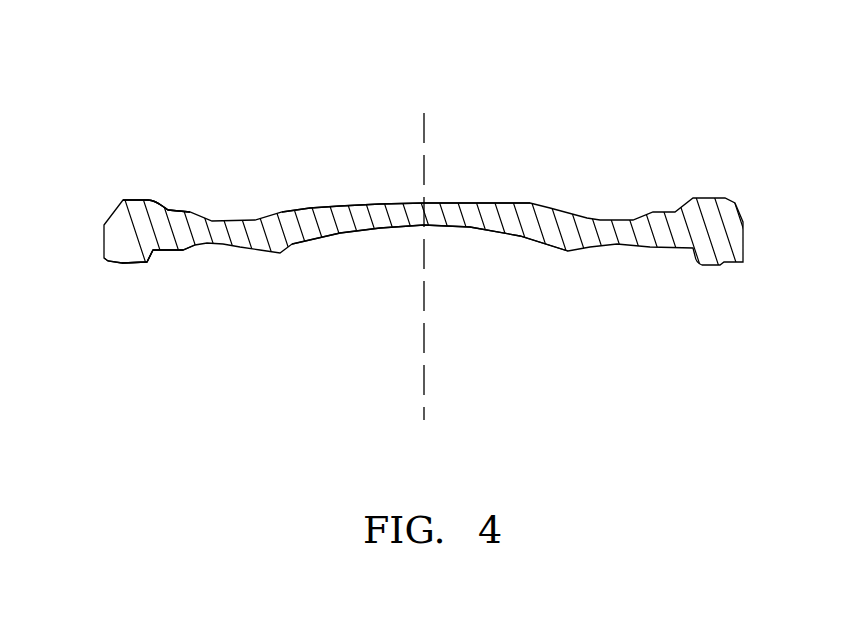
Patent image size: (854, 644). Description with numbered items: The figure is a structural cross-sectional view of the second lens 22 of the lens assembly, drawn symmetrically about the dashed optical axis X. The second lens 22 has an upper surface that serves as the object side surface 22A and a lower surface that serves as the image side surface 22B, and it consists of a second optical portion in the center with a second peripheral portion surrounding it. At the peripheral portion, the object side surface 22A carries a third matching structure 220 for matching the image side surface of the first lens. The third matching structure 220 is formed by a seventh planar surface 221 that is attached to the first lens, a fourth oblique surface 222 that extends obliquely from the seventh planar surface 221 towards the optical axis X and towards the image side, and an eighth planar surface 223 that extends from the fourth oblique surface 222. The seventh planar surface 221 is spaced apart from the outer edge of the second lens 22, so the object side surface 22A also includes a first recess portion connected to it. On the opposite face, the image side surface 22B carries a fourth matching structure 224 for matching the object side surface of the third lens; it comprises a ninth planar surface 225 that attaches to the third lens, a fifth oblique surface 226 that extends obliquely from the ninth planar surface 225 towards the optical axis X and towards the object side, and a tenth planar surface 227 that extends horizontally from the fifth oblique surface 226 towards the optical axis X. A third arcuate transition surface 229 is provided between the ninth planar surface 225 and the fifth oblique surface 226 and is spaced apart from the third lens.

The second lens 22 is at (716, 63).
The object side surface 22A is at (399, 201).
The image side surface 22B is at (481, 235).
The central axis X is at (424, 340).
The third matching structure 220 is at (200, 159).
The seventh planar surface 221 is at (142, 198).
The fourth oblique surface 222 is at (163, 205).
The eighth planar surface 223 is at (178, 209).
The fourth matching structure 224 is at (210, 295).
The ninth planar surface 225 is at (141, 266).
The fifth oblique surface 226 is at (157, 262).
The tenth planar surface 227 is at (171, 254).
The third arcuate transition surface 229 is at (139, 258).